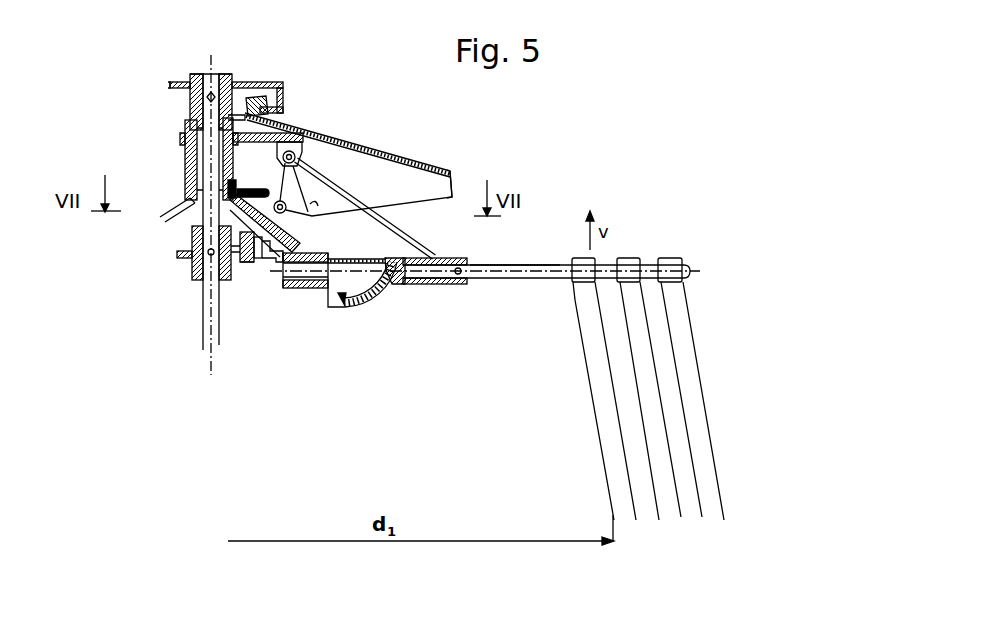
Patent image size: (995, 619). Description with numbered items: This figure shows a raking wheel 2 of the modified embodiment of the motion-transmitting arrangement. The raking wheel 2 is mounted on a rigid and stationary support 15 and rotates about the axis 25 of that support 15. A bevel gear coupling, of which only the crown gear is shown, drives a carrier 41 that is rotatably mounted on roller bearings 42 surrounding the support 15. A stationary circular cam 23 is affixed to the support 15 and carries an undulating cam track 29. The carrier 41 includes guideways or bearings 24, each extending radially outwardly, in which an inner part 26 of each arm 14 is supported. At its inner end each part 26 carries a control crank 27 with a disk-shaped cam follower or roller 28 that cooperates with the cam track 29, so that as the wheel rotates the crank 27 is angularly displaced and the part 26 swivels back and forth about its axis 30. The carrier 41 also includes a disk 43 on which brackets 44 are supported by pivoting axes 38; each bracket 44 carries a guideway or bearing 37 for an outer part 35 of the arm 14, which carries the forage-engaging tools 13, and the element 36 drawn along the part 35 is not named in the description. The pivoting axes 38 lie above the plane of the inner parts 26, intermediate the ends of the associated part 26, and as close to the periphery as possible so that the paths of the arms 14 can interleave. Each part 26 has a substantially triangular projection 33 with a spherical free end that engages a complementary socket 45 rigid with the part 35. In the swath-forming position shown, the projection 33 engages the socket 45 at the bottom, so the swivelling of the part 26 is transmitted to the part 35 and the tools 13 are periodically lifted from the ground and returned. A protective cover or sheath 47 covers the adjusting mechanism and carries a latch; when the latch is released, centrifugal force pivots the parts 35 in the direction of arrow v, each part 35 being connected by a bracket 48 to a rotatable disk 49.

The raking wheel 2 is at (365, 134).
The forage-engaging tools 13 is at (667, 521).
The arms 14 is at (516, 259).
The support 15 is at (200, 314).
The circular cam 23 is at (192, 270).
The guideway 24 is at (315, 296).
The axis 25 is at (209, 63).
The part 26 is at (299, 292).
The control crank 27 is at (278, 266).
The cam follower 28 is at (249, 265).
The cam track 29 is at (246, 265).
The axis 30 is at (287, 282).
The projection 33 is at (384, 291).
The part 35 is at (493, 278).
The thread eyelets 36 is at (546, 275).
The guideway 37 is at (436, 258).
The pivoting axis 38 is at (298, 157).
The carrier 41 is at (185, 166).
The roller bearings 42 is at (186, 141).
The disk 43 is at (277, 137).
The bracket 44 is at (367, 217).
The socket 45 is at (357, 299).
The protective cover 47 is at (436, 171).
The bracket 48 is at (284, 213).
The disk 49 is at (250, 188).